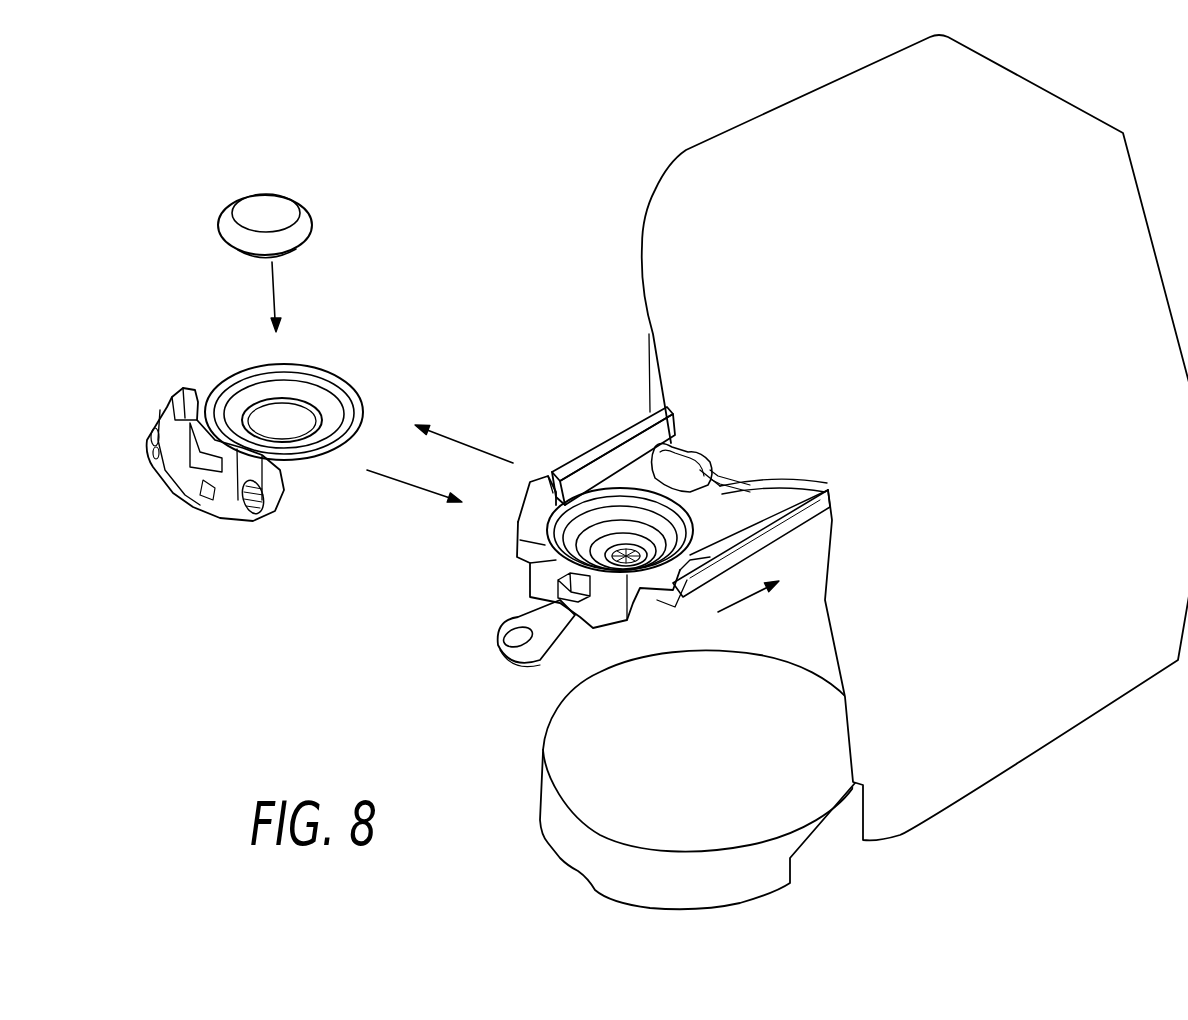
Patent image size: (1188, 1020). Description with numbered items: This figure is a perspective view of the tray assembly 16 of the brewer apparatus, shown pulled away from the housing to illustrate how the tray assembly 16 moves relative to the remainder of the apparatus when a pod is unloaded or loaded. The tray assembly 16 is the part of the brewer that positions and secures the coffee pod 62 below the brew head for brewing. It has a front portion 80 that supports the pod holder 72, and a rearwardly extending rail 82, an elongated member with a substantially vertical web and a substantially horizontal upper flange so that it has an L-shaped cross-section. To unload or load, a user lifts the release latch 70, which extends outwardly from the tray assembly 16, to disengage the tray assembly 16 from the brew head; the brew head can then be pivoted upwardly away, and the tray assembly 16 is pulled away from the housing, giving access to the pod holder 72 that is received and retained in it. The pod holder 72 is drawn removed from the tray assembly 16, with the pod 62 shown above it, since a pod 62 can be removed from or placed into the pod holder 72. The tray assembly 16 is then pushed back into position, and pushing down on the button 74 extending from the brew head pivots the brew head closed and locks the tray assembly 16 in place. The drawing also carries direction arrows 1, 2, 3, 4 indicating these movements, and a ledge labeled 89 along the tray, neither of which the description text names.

The direction arrow 1 is at (464, 432).
The direction arrow 2 is at (289, 297).
The direction arrow 3 is at (414, 497).
The direction arrow 4 is at (748, 606).
The tray assembly 16 is at (651, 508).
The coffee pod 62 is at (304, 206).
The release latch 70 is at (500, 655).
The pod holder 72 is at (337, 380).
The button 74 is at (670, 457).
The front portion 80 is at (632, 560).
The rail 82 is at (590, 455).
The front ledge 89 is at (770, 513).